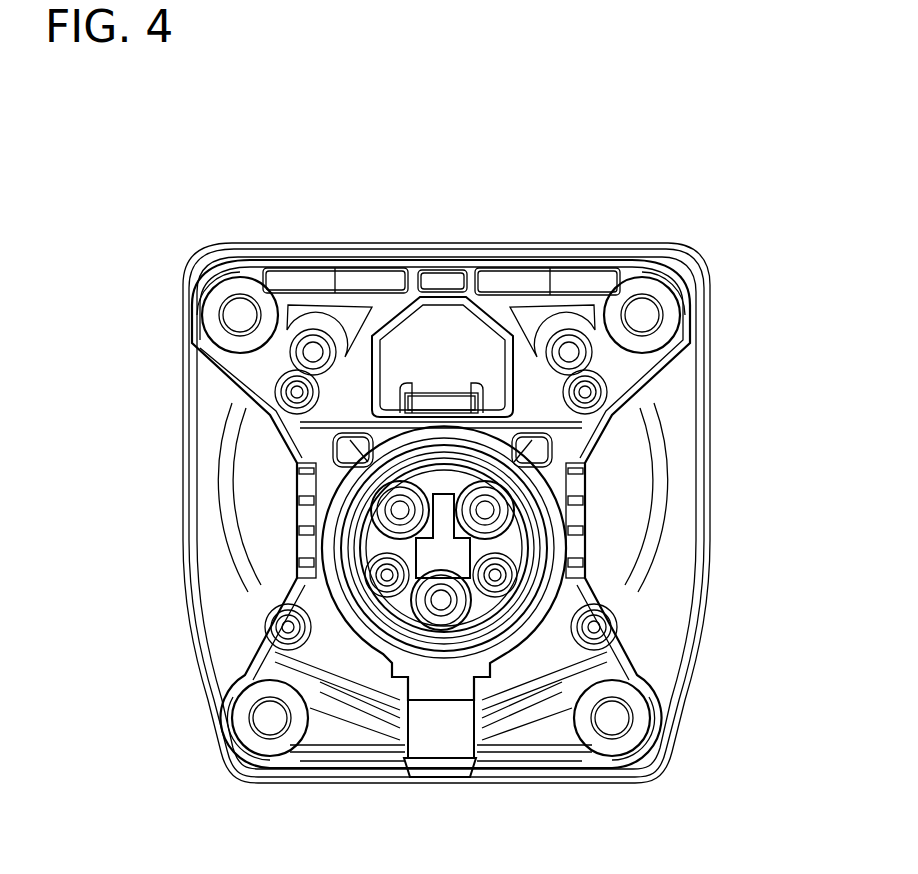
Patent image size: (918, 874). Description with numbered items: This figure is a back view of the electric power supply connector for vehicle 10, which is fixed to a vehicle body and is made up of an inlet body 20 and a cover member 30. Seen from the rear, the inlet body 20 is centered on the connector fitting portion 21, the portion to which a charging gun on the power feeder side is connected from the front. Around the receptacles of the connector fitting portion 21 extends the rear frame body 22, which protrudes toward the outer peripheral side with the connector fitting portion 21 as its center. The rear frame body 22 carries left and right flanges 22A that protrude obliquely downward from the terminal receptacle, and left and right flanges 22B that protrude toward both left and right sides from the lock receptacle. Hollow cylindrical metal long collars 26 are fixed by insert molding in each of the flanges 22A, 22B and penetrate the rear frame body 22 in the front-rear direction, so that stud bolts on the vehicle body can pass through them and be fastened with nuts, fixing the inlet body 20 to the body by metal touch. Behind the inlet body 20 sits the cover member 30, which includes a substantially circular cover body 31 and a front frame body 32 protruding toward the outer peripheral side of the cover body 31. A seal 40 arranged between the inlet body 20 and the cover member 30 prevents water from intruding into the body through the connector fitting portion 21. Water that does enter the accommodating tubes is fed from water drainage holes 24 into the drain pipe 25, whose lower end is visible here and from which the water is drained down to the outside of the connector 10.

The electric power supply connector for vehicle 10 is at (446, 208).
The inlet body 20 is at (582, 452).
The connector fitting portion 21 is at (428, 555).
The rear frame body 22 is at (583, 600).
The flanges 22A is at (252, 757).
The flanges 22B is at (224, 283).
The drain pipe 24 is at (395, 530).
The drain pipe 25 is at (441, 770).
The long collars 26 is at (222, 300).
The cover member 30 is at (717, 463).
The cover body 31 is at (625, 498).
The front frame body 32 is at (670, 548).
The seal 40 is at (640, 376).